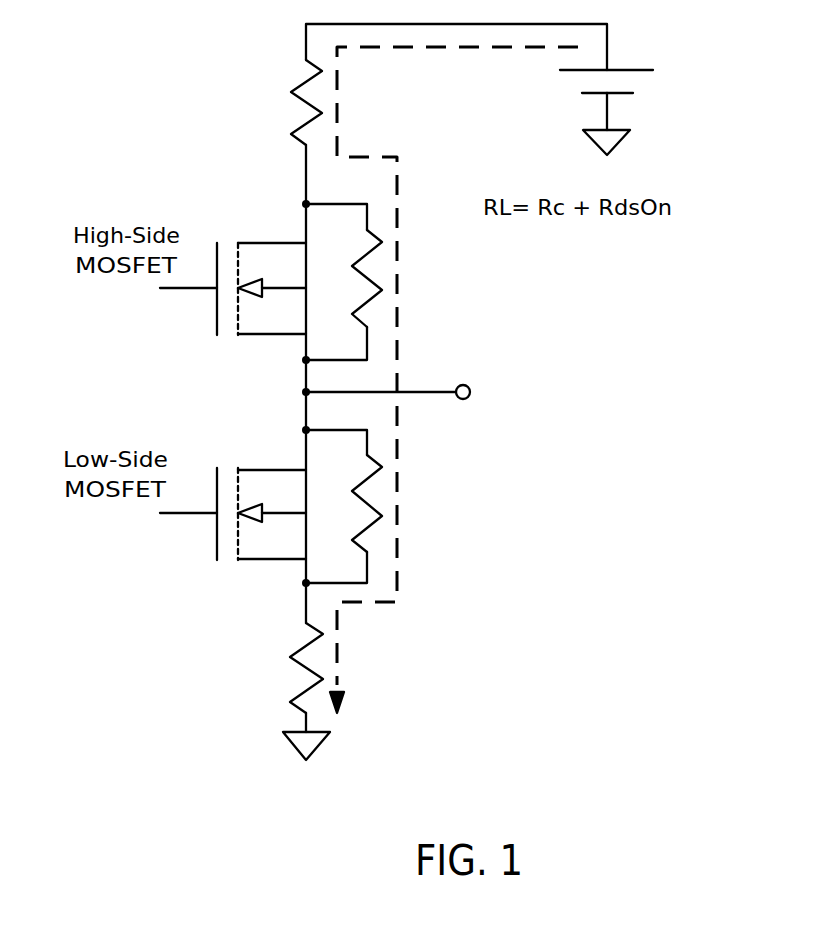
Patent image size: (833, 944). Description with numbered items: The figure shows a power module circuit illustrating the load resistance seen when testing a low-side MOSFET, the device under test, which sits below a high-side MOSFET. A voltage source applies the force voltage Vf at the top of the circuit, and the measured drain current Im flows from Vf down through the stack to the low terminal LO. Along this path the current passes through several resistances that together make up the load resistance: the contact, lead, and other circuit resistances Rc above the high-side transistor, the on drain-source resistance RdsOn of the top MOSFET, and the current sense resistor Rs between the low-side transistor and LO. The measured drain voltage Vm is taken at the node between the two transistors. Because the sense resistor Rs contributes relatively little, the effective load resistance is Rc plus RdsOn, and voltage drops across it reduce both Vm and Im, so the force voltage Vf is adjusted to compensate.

The contact, lead, and other circuit resistances Rc is at (334, 102).
The on drain-source resistance of top MOSFET RdsOn is at (419, 391).
The current sense resistor Rs is at (330, 668).
The measured drain voltage Vm is at (558, 394).
The force voltage Vf is at (662, 94).
The measured drain current Im is at (454, 380).
The low terminal LO is at (327, 736).